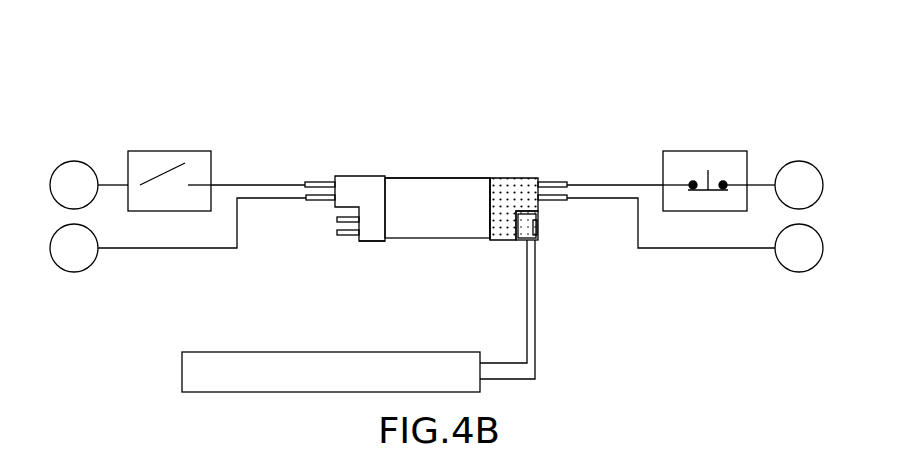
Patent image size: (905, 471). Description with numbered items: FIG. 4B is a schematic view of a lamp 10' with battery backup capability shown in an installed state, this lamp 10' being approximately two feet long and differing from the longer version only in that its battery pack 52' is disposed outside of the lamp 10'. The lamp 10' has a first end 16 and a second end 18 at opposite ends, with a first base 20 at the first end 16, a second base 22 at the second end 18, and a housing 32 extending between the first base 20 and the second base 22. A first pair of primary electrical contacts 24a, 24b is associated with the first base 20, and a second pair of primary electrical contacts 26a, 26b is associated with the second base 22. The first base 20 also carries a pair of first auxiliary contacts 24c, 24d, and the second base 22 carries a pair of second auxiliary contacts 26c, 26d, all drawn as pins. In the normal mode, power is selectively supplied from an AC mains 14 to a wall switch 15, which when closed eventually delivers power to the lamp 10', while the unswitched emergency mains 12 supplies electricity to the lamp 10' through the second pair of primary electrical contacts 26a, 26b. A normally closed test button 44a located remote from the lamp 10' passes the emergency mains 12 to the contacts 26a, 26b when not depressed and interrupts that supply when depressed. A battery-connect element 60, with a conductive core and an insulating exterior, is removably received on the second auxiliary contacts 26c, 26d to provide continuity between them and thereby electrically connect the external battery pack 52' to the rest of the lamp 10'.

The lamp 10' is at (437, 97).
The emergency mains 12 is at (799, 290).
The AC mains 14 is at (75, 290).
The wall switch 15 is at (176, 125).
The first end 16 is at (371, 262).
The second end 18 is at (488, 152).
The first base 20 is at (360, 182).
The second base 22 is at (505, 178).
The primary electrical contact 24a is at (310, 183).
The primary electrical contact 24b is at (308, 202).
The first auxiliary contact 24c is at (337, 219).
The first auxiliary contact 24d is at (343, 234).
The primary electrical contact 26a is at (567, 183).
The primary electrical contact 26b is at (568, 201).
The second auxiliary contact 26c is at (513, 238).
The second auxiliary contact 26d is at (515, 212).
The housing 32 is at (440, 240).
The test button 44a is at (713, 133).
The battery pack 52' is at (322, 318).
The battery-connect element 60 is at (539, 229).